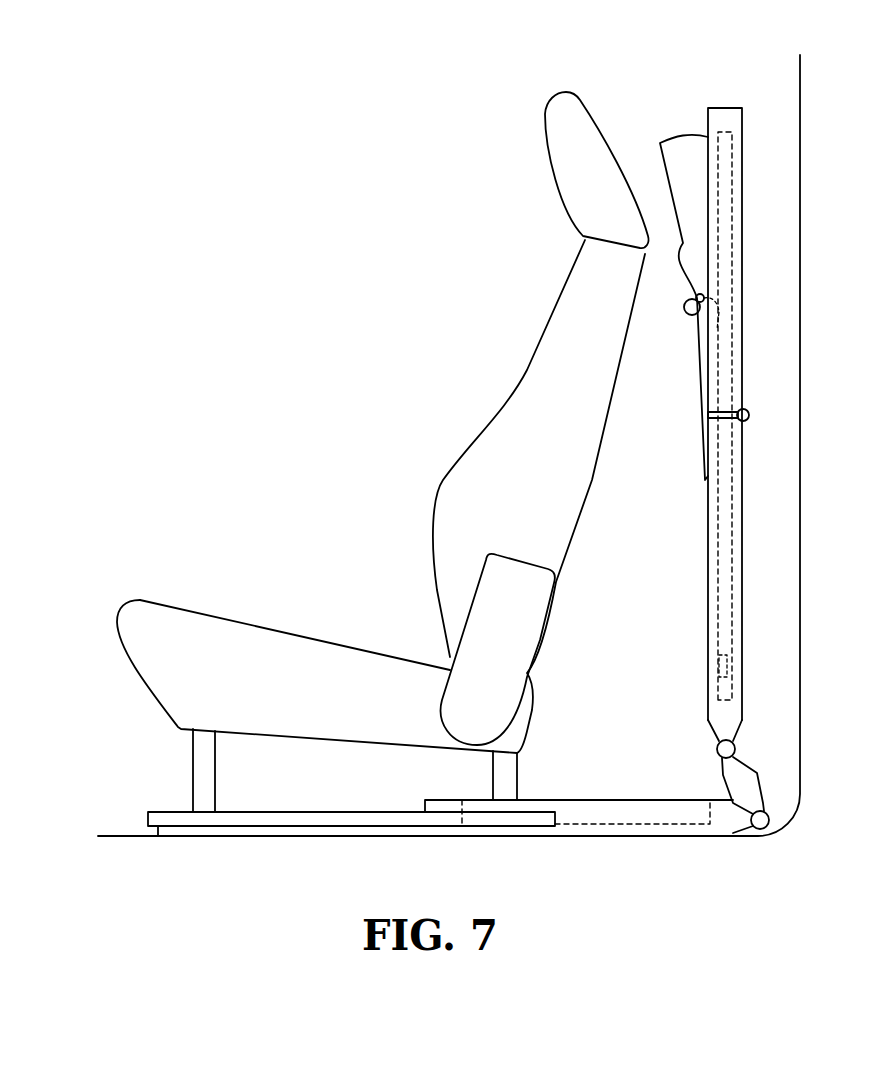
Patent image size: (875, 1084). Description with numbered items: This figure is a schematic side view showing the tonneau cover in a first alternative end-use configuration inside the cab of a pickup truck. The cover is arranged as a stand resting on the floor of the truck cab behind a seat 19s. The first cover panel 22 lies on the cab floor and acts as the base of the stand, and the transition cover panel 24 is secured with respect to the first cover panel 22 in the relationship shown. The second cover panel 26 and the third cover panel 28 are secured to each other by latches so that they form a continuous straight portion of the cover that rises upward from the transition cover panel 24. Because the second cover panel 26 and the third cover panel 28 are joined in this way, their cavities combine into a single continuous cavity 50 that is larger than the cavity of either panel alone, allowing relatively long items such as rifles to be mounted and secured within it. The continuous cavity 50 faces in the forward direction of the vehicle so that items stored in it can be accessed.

The seat 19s is at (593, 145).
The second cover panel 26 is at (742, 517).
The third cover panel 28 is at (742, 277).
The single continuous cavity 50 is at (703, 688).
The first cover panel 22 is at (638, 800).
The transition cover panel 24 is at (760, 773).